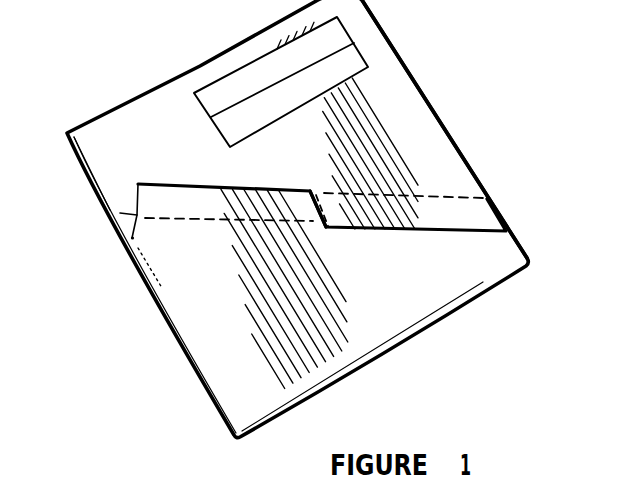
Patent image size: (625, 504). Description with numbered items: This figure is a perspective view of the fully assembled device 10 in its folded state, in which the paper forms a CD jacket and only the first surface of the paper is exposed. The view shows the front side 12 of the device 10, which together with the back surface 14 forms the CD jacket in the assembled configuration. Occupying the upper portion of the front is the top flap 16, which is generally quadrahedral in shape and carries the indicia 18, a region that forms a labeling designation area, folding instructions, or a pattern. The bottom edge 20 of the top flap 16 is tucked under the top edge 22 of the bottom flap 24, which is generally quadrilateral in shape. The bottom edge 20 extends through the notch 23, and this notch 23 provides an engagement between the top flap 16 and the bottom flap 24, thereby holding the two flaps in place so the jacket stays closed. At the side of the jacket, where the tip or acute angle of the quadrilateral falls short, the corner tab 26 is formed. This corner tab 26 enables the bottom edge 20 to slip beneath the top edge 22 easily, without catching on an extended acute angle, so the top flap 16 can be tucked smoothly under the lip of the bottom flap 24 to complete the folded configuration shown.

The device 10 is at (490, 119).
The front side 12 is at (441, 104).
The back surface 14 is at (99, 224).
The top flap 16 is at (135, 154).
The indicia 18 is at (347, 67).
The bottom edge 20 is at (133, 216).
The top edge 22 is at (205, 184).
The notch 23 is at (311, 189).
The bottom flap 24 is at (387, 291).
The corner tab 26 is at (162, 207).